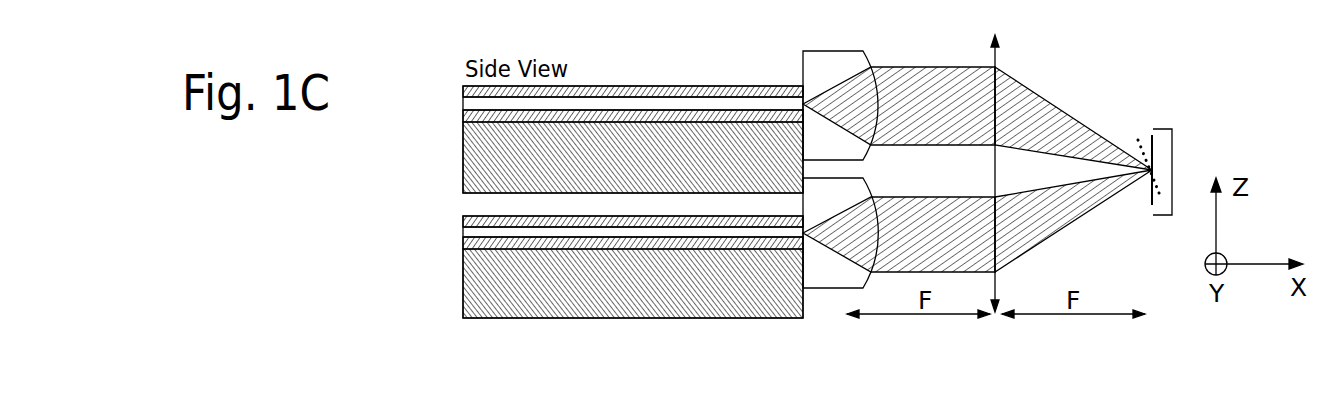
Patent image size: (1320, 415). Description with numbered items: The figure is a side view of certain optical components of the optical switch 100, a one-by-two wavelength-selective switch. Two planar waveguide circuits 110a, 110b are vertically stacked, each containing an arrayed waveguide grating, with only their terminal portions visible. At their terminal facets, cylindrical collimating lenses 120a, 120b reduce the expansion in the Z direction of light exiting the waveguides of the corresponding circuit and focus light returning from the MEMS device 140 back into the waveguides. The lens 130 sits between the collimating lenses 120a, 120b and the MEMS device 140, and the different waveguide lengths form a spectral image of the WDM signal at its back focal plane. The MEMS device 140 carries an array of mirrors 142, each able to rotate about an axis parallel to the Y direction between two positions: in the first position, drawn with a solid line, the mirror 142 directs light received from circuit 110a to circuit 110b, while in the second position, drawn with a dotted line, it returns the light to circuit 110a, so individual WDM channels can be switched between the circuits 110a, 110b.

The optical switch 100 is at (367, 344).
The planar waveguide circuit 110a is at (455, 212).
The planar waveguide circuit 110b is at (455, 84).
The cylindrical collimating lens 120a is at (822, 278).
The cylindrical collimating lens 120b is at (866, 64).
The lens 130 is at (1012, 39).
The MEMS device 140 is at (1175, 162).
The mirror 142 is at (1145, 137).